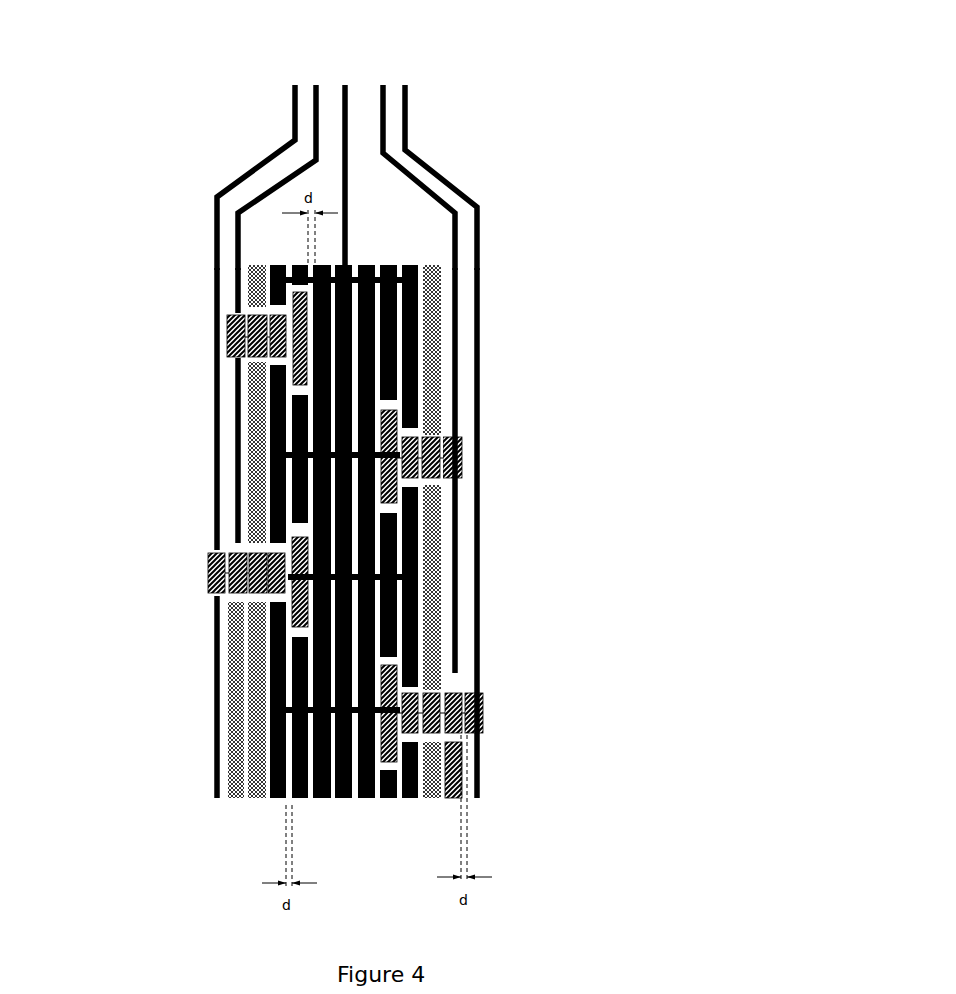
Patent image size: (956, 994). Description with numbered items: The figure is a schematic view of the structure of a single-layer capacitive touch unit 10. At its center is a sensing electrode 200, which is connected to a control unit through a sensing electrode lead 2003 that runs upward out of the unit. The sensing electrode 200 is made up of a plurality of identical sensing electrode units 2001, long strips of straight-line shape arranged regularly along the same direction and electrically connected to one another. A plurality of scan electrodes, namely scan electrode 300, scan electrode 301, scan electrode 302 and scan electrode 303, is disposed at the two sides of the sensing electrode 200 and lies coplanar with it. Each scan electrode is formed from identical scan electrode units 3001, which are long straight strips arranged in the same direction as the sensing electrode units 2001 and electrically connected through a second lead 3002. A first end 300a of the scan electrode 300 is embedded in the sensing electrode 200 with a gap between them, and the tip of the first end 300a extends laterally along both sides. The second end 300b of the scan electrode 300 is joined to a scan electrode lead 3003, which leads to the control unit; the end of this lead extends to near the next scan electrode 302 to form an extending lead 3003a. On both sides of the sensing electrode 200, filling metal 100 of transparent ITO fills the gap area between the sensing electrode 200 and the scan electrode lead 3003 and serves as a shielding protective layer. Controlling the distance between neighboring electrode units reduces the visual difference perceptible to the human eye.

The single-layer capacitive touch unit 10 is at (100, 215).
The filling metal 100 is at (440, 325).
The sensing electrode 200 is at (270, 803).
The sensing electrode unit 2001 is at (378, 803).
The sensing electrode lead 2003 is at (348, 132).
The scan electrode 300 is at (475, 457).
The first end of the scan electrode 300a is at (456, 483).
The second end of the scan electrode 300b is at (205, 585).
The scan electrode unit 3001 is at (470, 693).
The second lead 3002 is at (483, 733).
The scan electrode lead 3003 is at (455, 190).
The extending lead 3003a is at (456, 577).
The scan electrode 301 is at (205, 593).
The scan electrode 302 is at (483, 695).
The scan electrode 303 is at (222, 336).